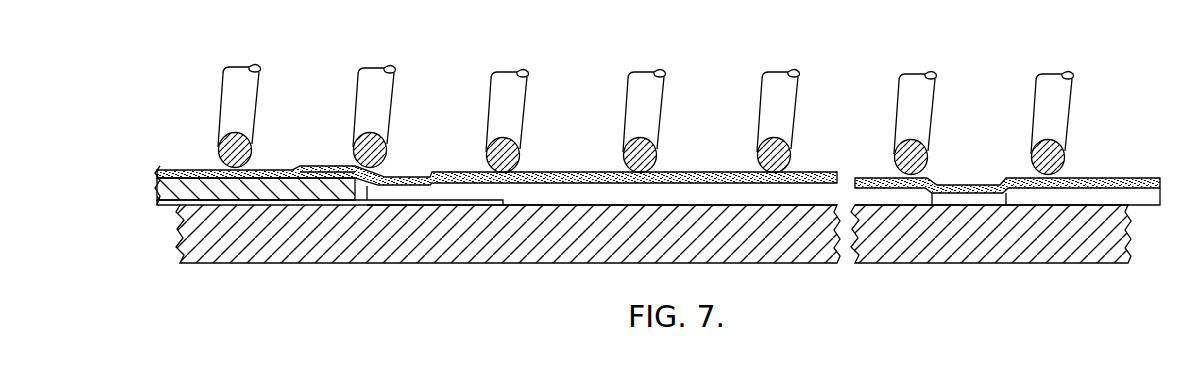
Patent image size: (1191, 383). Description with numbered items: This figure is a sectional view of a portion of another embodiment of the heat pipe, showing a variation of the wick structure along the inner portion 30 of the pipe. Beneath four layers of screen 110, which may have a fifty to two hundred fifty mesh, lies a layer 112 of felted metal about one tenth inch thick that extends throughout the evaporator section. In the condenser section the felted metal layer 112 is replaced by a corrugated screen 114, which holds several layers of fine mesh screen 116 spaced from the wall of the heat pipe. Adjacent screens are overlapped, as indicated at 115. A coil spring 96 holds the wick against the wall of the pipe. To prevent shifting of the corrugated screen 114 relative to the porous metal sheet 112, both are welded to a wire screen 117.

The inner portion 30 is at (445, 260).
The coil spring 96 is at (520, 112).
The screen 110 is at (273, 177).
The layer of felted metal 112 is at (186, 188).
The corrugated screen 114 is at (694, 200).
The overlap 115 is at (967, 190).
The fine mesh screen 116 is at (1113, 178).
The wire screen 117 is at (497, 199).